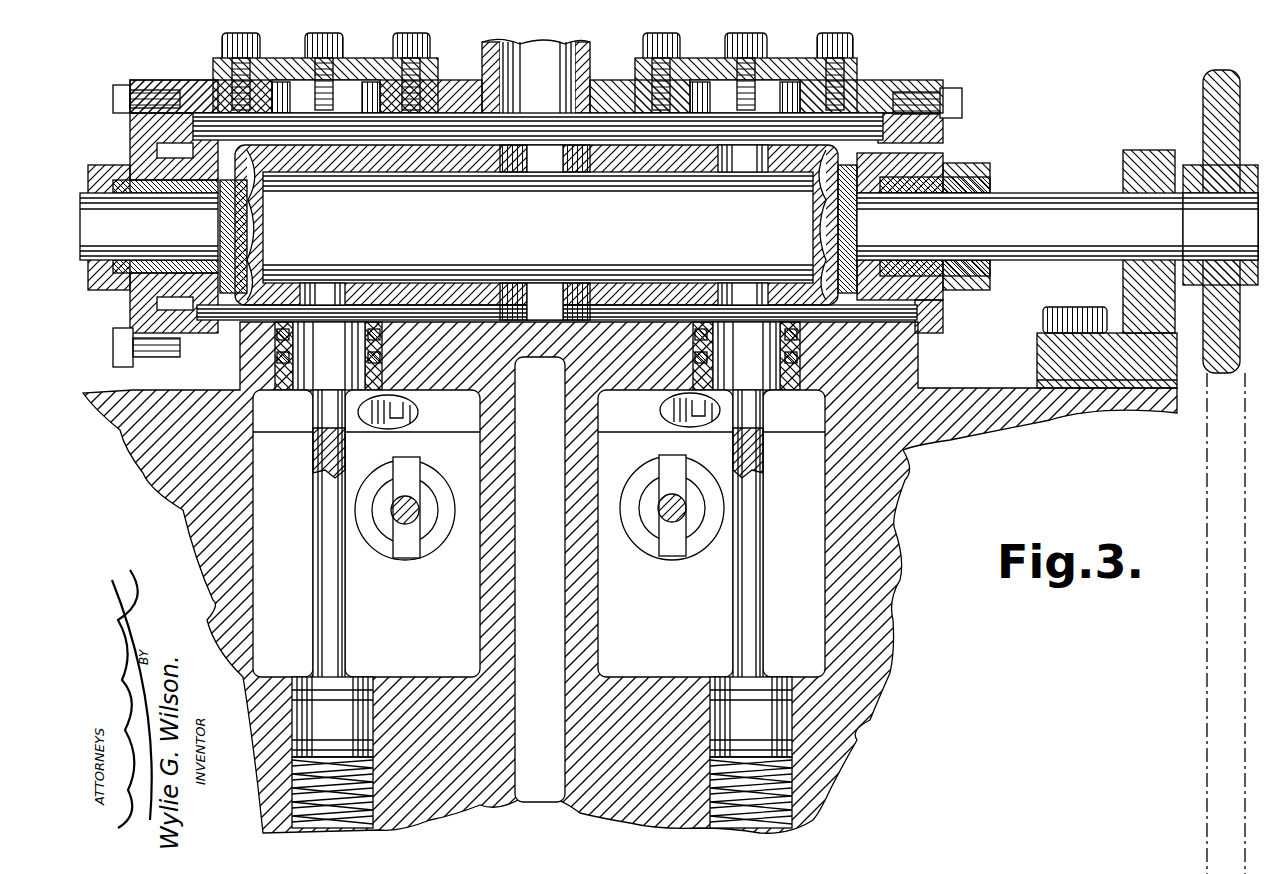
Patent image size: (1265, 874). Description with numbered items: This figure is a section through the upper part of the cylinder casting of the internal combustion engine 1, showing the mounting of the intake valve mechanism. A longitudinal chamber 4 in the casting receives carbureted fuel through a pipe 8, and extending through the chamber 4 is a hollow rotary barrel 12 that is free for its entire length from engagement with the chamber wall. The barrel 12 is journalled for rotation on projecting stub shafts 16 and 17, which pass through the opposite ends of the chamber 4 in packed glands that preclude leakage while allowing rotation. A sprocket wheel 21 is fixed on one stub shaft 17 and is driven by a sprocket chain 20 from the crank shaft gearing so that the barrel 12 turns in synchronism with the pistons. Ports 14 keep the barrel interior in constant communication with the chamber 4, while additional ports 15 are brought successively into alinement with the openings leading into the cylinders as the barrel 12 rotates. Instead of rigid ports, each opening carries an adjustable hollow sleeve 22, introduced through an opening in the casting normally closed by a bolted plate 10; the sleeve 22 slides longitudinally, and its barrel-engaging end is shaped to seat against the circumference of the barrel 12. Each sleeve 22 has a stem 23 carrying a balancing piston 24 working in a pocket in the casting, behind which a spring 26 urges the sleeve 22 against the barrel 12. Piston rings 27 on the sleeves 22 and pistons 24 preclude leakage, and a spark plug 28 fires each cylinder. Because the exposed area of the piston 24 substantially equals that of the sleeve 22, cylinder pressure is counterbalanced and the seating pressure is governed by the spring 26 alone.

The internal combustion engine 1 is at (880, 584).
The chamber 4 is at (223, 147).
The pipe 8 is at (583, 48).
The plate 10 is at (432, 68).
The rotary barrel 12 is at (787, 233).
The port 14 is at (548, 162).
The port 15 is at (333, 295).
The stub shaft 16 is at (149, 226).
The stub shaft 17 is at (1033, 212).
The sprocket chain 20 is at (1205, 498).
The sprocket wheel 21 is at (1203, 93).
The adjustable sleeve 22 is at (287, 395).
The stem 23 is at (318, 543).
The balancing piston 24 is at (375, 680).
The spring 26 is at (293, 765).
The piston ring 27 is at (382, 333).
The spark plug 28 is at (412, 425).